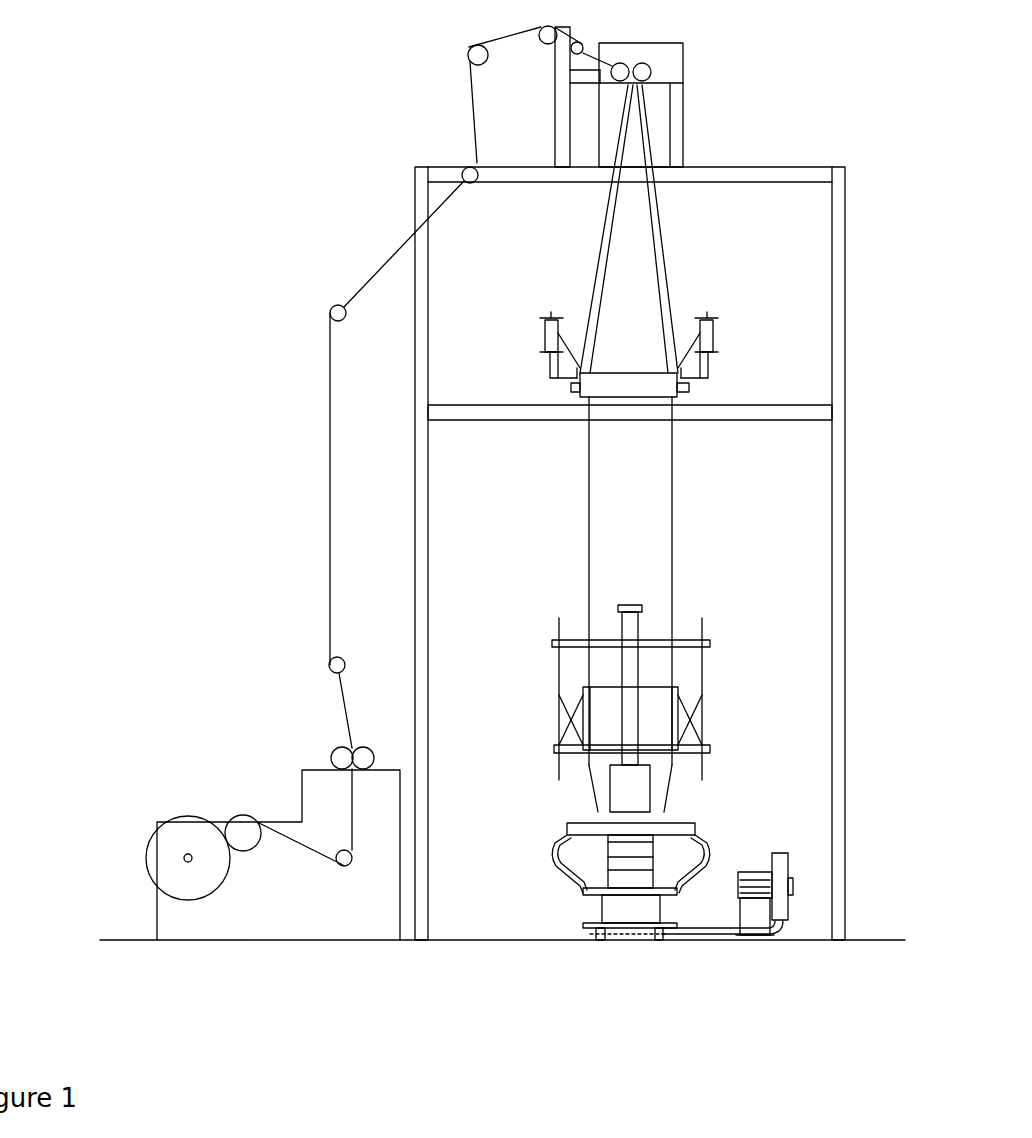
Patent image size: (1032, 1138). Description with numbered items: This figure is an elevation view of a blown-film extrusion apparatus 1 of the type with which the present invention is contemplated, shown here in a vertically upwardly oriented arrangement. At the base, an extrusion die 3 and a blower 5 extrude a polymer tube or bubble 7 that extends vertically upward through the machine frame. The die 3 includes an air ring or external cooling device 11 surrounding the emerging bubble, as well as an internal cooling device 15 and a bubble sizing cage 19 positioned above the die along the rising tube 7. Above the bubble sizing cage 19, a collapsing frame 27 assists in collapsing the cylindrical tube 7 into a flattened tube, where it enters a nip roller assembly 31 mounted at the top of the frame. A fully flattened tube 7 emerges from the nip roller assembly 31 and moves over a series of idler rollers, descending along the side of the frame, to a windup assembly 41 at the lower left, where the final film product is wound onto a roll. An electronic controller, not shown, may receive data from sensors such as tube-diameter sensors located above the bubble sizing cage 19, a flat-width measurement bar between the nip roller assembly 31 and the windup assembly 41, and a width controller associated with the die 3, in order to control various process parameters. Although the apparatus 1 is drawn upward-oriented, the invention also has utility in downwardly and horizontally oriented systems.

The blown-film extrusion apparatus 1 is at (225, 495).
The extrusion die 3 is at (629, 836).
The blower 5 is at (778, 852).
The polymer tube or bubble 7 is at (635, 512).
The air ring or external cooling device 11 is at (588, 823).
The internal cooling device 15 is at (621, 708).
The bubble sizing cage 19 is at (608, 708).
The collapsing frame 27 is at (577, 392).
The nip roller assembly 31 is at (693, 65).
The windup assembly 41 is at (263, 793).